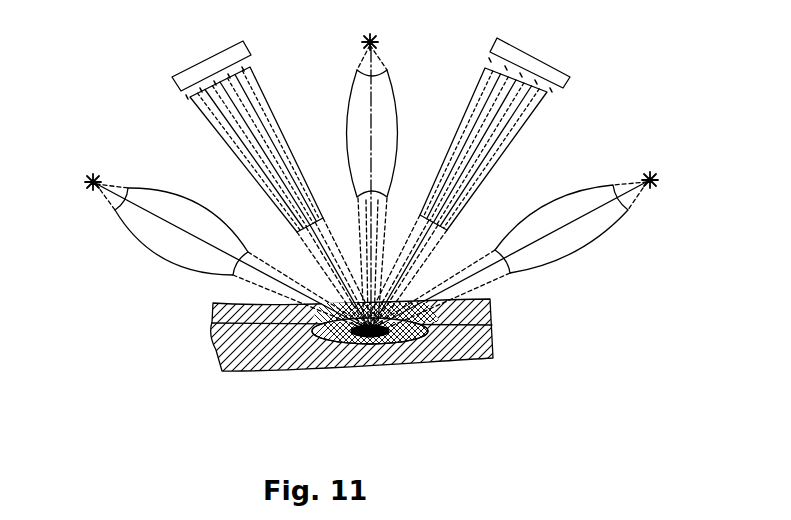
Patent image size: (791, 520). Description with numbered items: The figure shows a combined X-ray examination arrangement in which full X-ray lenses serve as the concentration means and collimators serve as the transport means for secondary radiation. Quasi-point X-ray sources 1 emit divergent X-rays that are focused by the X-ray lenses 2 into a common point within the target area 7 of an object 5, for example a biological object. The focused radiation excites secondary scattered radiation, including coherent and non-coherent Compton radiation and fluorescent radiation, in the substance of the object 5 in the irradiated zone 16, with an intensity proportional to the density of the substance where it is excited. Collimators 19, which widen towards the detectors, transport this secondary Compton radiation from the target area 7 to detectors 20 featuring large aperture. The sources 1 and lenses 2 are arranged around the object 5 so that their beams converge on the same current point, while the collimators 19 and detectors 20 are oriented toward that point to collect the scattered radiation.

The X-ray source 1 is at (87, 183).
The X-ray lens 2 is at (142, 220).
The object 5 is at (213, 355).
The target area 7 is at (493, 323).
The zone 16 is at (213, 326).
The collimator 19 is at (211, 125).
The detector 20 is at (172, 77).